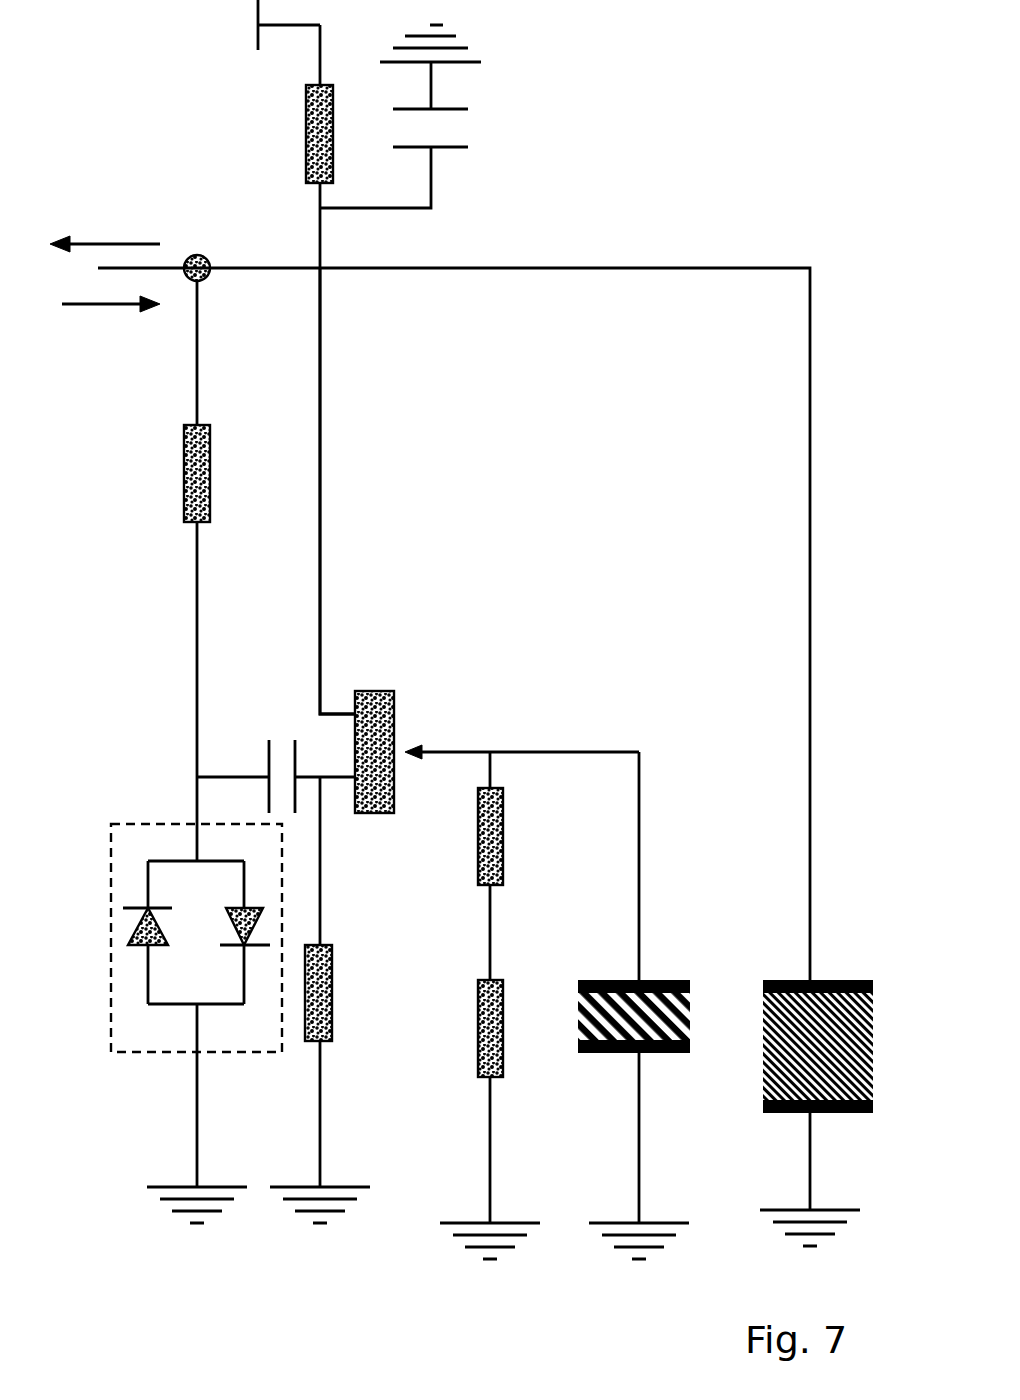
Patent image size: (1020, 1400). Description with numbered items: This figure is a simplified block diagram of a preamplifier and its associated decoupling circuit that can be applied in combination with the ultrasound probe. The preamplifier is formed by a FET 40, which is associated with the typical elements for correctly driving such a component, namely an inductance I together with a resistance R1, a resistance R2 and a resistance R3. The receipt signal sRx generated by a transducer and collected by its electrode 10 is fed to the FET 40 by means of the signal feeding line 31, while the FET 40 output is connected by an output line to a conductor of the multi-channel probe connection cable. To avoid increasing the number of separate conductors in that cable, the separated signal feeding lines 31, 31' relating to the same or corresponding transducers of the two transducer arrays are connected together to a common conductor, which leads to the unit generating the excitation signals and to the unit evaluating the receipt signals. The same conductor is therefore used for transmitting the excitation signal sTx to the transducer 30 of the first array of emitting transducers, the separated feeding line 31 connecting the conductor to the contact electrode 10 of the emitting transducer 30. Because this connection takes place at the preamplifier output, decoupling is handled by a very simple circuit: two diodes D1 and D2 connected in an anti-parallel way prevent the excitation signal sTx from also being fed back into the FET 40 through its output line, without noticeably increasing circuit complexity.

The signal feeding line 31 is at (454, 624).
The signal feeding line 31' is at (522, 822).
The FET 40 is at (378, 703).
The transducer 30 is at (766, 980).
The electrode 10 is at (803, 969).
The resistance R1 is at (492, 1003).
The resistance R2 is at (320, 992).
The resistance R3 is at (197, 472).
The inductance I is at (493, 835).
The diode D1 is at (152, 935).
The diode D2 is at (236, 940).
The receipt signal sRx is at (100, 243).
The excitation signal sTx is at (110, 306).